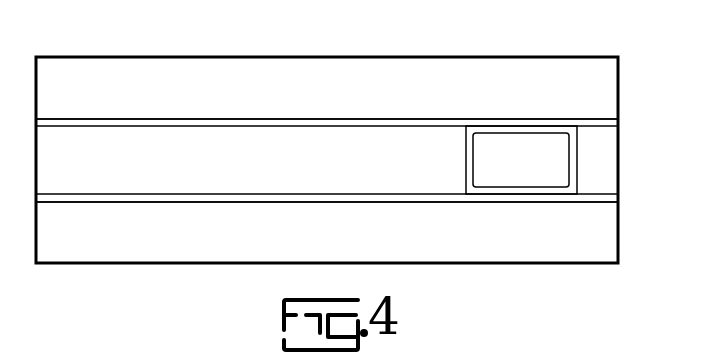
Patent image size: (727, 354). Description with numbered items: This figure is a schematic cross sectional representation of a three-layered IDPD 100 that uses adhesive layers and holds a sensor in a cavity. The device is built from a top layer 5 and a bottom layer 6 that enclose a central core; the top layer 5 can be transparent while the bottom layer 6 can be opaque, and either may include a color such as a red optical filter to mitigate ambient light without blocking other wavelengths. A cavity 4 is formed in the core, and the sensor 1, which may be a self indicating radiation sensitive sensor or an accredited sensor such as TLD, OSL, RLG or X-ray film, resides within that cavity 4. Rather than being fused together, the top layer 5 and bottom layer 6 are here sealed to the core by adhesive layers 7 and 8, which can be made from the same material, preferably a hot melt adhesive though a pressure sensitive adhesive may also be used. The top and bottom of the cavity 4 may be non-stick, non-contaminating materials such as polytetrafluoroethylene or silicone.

The IDPD 100 is at (428, 56).
The top layer 5 is at (582, 92).
The adhesive layer 7 is at (588, 120).
The cavity 4 is at (555, 133).
The sensor 1 is at (550, 155).
The adhesive layer 8 is at (598, 199).
The bottom layer 6 is at (567, 237).